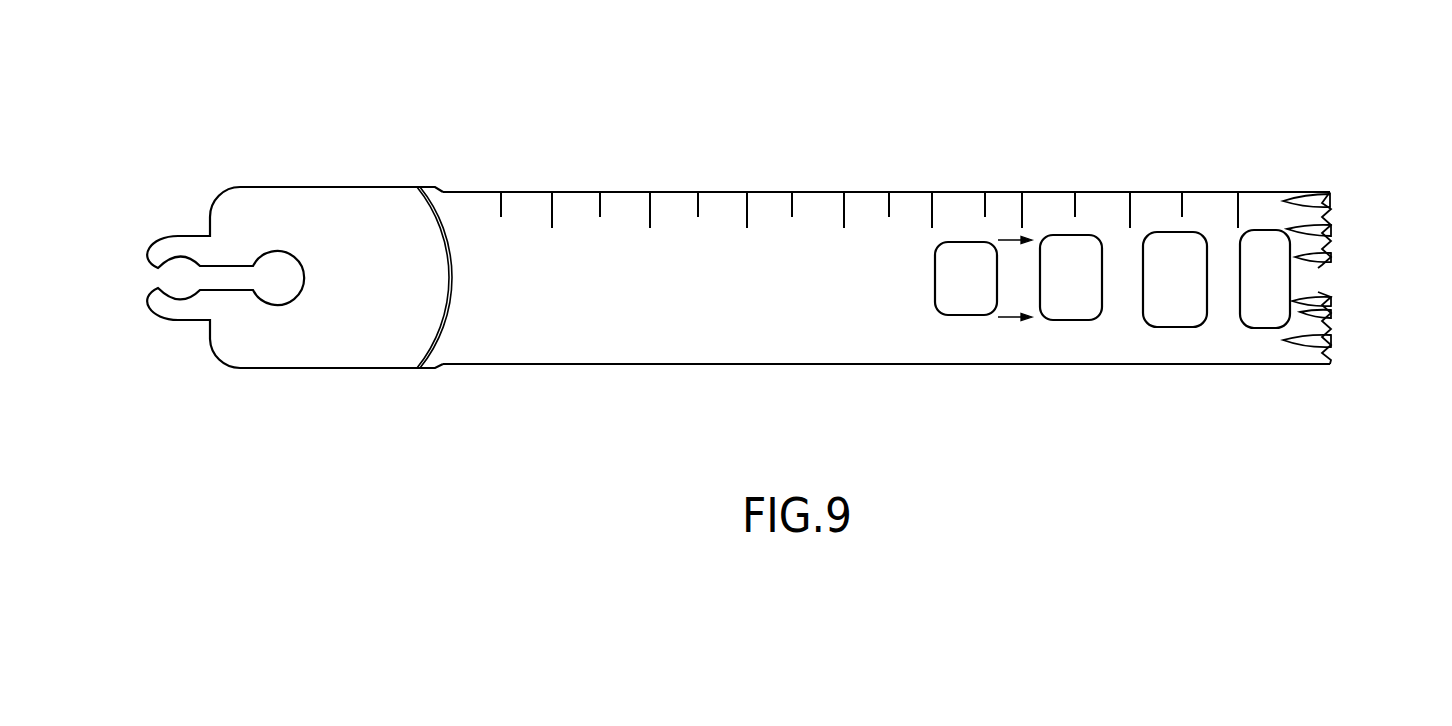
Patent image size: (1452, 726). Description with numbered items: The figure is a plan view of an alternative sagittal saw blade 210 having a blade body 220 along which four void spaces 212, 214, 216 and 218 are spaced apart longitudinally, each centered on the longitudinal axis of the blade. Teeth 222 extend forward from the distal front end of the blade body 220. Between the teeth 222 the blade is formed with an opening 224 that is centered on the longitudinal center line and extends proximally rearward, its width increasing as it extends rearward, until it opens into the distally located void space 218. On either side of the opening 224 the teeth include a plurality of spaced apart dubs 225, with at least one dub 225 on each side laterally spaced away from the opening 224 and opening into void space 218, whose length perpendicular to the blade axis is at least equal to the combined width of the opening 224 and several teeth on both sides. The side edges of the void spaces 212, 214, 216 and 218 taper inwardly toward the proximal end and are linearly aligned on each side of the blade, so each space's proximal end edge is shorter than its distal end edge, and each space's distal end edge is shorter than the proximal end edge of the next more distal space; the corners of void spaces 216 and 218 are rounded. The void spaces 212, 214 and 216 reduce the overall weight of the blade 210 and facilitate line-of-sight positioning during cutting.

The sagittal saw blade 210 is at (518, 117).
The void space 212 is at (972, 262).
The void space 214 is at (1073, 277).
The void space 216 is at (1187, 275).
The void space 218 is at (1275, 247).
The blade body 220 is at (672, 301).
The teeth 222 is at (1336, 228).
The opening 224 is at (1315, 281).
The dubs 225 is at (1336, 231).